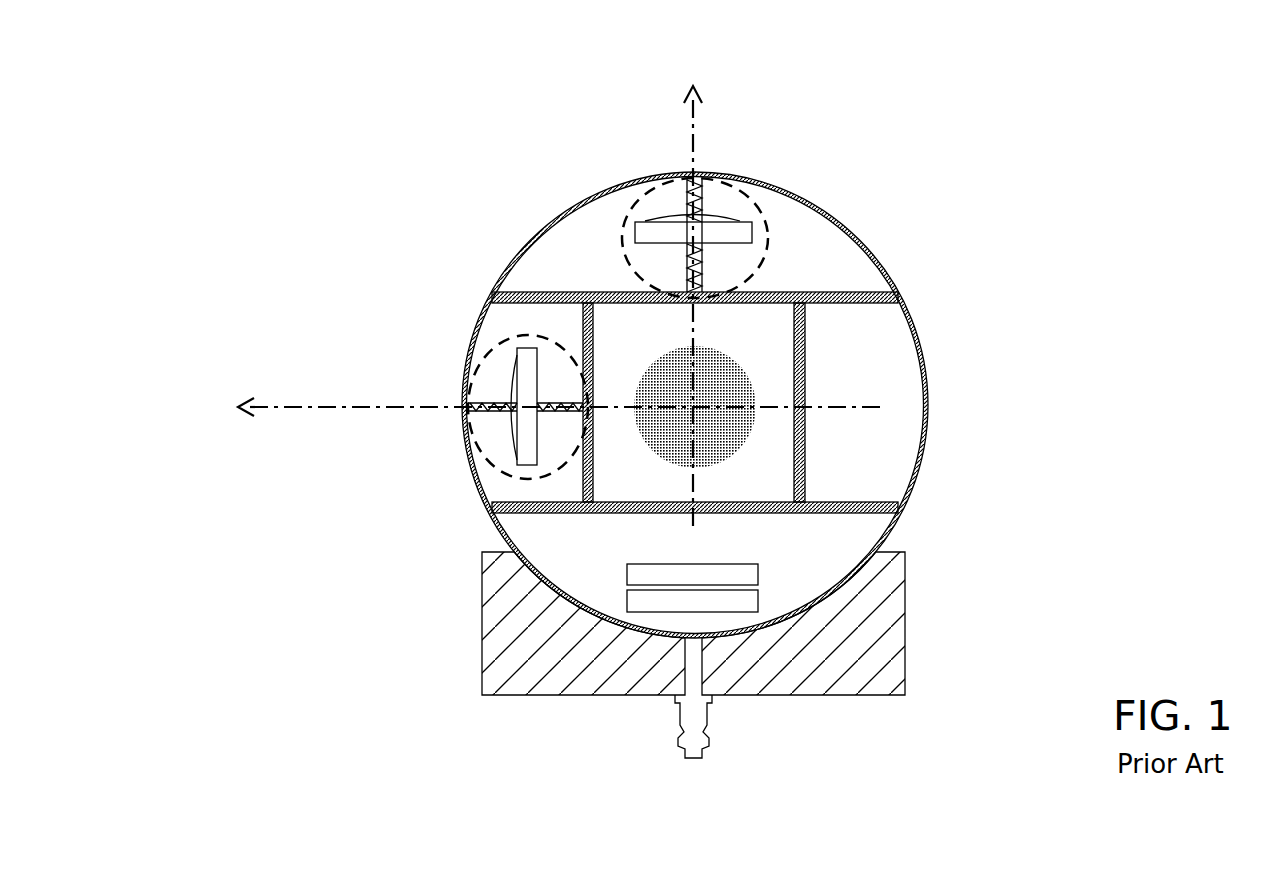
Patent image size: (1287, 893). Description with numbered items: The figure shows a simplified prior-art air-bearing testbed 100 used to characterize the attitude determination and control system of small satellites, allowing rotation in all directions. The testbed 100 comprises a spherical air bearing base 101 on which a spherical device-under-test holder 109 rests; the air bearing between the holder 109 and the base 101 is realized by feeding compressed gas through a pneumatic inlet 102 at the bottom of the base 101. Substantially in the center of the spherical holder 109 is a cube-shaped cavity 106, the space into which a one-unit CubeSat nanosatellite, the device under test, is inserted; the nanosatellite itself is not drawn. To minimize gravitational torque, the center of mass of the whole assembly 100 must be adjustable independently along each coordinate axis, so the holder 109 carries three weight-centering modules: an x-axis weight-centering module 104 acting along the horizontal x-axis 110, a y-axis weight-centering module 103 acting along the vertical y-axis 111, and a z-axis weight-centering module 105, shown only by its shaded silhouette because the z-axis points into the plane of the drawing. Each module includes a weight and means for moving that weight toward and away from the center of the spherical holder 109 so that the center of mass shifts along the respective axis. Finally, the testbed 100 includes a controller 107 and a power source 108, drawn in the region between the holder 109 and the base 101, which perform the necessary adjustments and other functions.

The testbed 100 is at (262, 122).
The spherical air bearing base 101 is at (482, 597).
The pneumatic inlet 102 is at (692, 725).
The y-axis weight-centering module 103 is at (742, 236).
The x-axis weight-centering module 104 is at (515, 443).
The z-axis weight-centering module 105 is at (745, 385).
The cavity 106 is at (760, 468).
The controller 107 is at (752, 573).
The power source 108 is at (752, 600).
The spherical device-under-test holder 109 is at (476, 340).
The x-axis 110 is at (296, 406).
The y-axis 111 is at (688, 120).